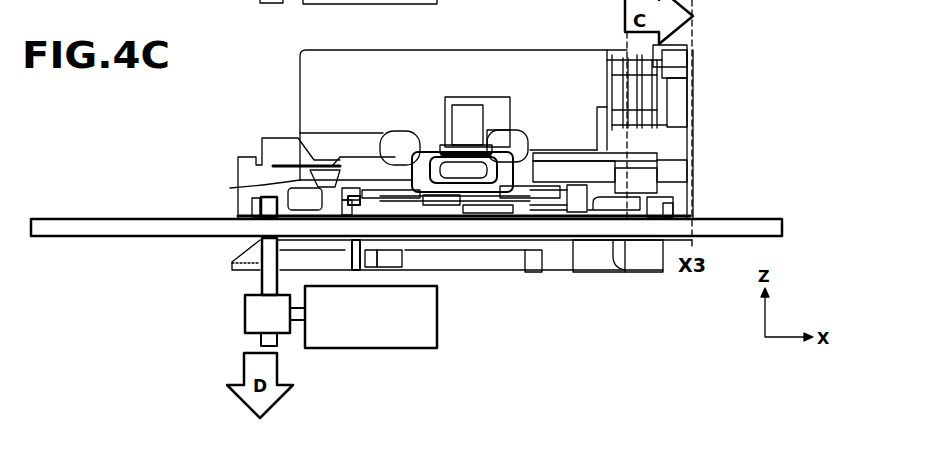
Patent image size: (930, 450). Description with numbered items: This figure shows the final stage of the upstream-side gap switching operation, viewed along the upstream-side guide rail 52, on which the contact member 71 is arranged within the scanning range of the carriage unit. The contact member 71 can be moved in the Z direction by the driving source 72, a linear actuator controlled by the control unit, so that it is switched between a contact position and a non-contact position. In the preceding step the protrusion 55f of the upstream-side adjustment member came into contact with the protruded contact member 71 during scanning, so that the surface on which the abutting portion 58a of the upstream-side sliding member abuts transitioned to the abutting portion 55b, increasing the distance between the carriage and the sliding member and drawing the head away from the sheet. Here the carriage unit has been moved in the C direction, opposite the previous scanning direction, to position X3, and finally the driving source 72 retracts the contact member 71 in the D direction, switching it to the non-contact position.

The upstream-side guide rail 52 is at (743, 219).
The abutting portion 55b is at (330, 172).
The abutting portion 58a is at (307, 178).
The contact member 71 is at (266, 278).
The protrusion 55f is at (352, 205).
The driving source 72 is at (380, 348).